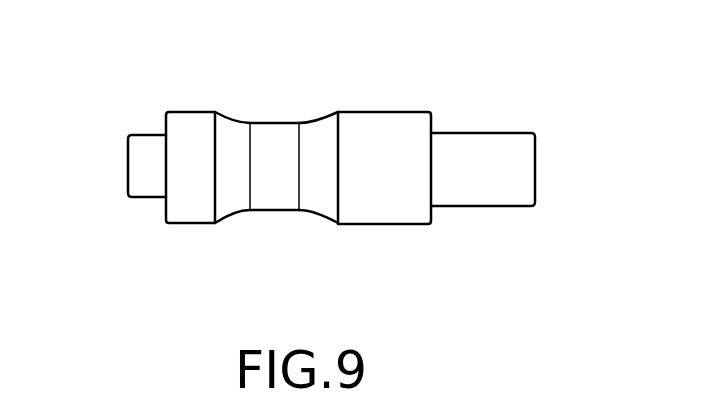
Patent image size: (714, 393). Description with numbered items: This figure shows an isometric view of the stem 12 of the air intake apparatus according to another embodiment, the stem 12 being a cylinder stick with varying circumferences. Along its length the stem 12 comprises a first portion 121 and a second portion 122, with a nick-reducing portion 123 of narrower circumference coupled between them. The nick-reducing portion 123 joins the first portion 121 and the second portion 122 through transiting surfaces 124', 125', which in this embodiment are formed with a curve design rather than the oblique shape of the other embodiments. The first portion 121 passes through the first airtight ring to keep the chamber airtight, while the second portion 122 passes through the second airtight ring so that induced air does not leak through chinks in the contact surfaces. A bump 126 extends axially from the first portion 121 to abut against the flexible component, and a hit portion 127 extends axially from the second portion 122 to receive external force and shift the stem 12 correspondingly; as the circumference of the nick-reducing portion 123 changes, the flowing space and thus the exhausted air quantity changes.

The stem 12 is at (560, 135).
The first portion 121 is at (186, 120).
The second portion 122 is at (388, 123).
The nick-reducing portion 123 is at (277, 127).
The transiting surface 124' is at (218, 209).
The transiting surface 125' is at (328, 209).
The bump 126 is at (128, 172).
The hit portion 127 is at (535, 178).